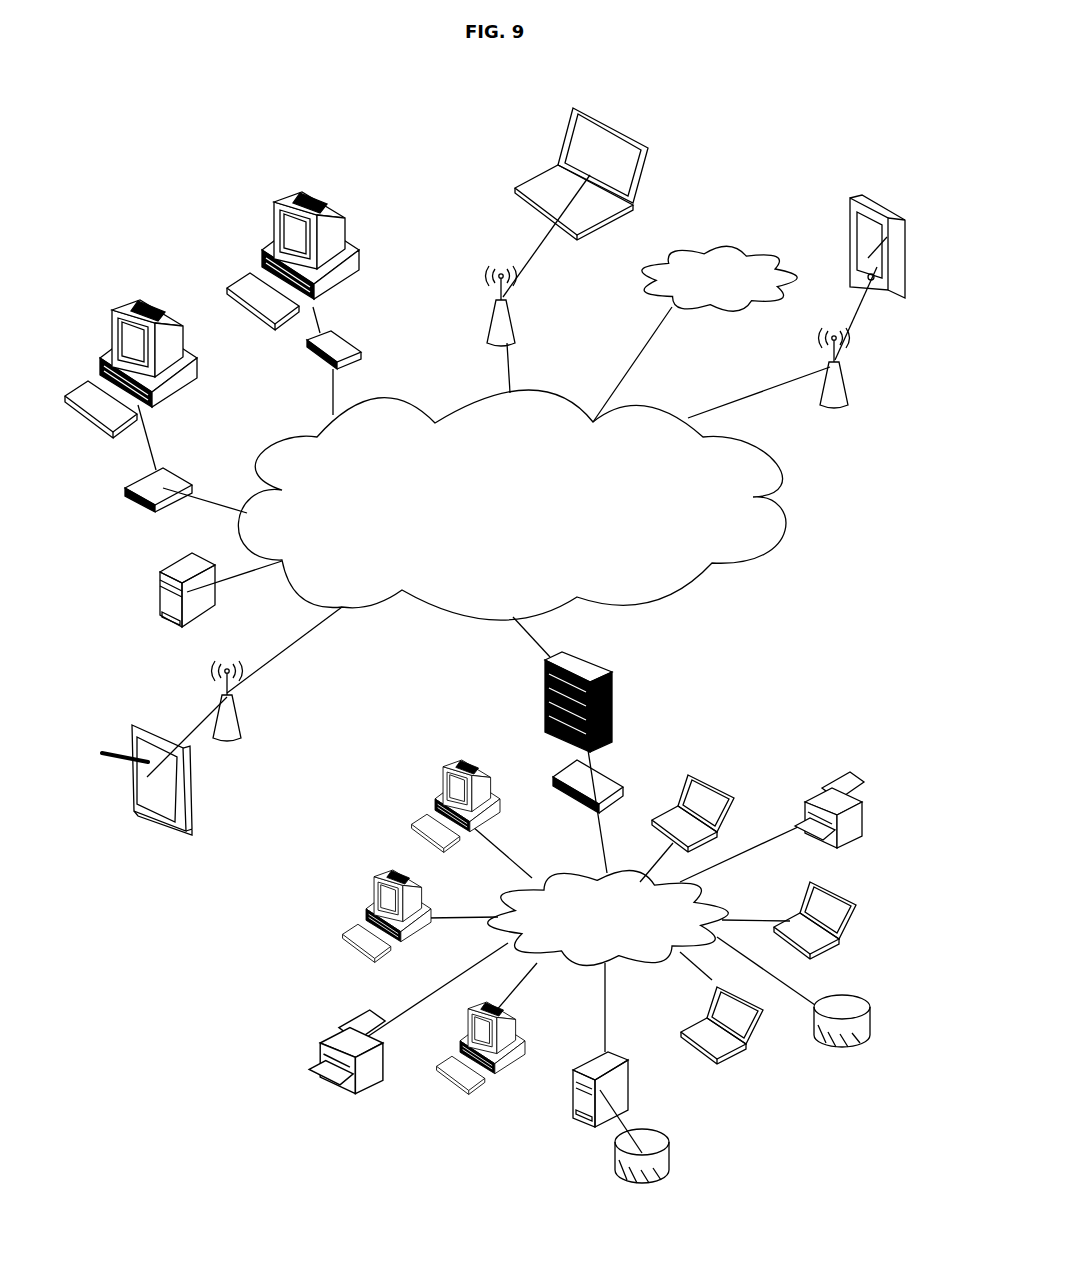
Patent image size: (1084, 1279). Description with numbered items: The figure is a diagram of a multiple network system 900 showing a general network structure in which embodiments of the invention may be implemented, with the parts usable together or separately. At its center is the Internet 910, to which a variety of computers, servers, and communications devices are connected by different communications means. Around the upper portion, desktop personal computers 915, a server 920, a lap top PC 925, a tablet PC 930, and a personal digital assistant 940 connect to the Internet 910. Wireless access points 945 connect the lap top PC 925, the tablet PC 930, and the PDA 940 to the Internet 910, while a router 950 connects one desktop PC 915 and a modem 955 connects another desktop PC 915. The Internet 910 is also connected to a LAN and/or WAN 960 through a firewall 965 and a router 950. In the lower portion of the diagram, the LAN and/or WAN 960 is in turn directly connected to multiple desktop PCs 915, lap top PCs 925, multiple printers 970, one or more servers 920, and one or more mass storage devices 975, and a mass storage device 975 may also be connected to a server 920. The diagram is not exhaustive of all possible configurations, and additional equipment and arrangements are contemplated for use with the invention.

The multiple network system 900 is at (381, 158).
The Internet 910 is at (452, 605).
The desktop personal computer 915 is at (137, 303).
The server 920 is at (160, 617).
The lap top PC 925 is at (517, 187).
The tablet PC 930 is at (160, 823).
The personal digital assistant 940 is at (850, 212).
The wireless access point 945 is at (497, 317).
The router 950 is at (310, 357).
The modem 955 is at (137, 480).
The LAN and/or WAN 960 is at (656, 292).
The firewall 965 is at (547, 687).
The printer 970 is at (850, 785).
The mass storage device 975 is at (855, 1008).